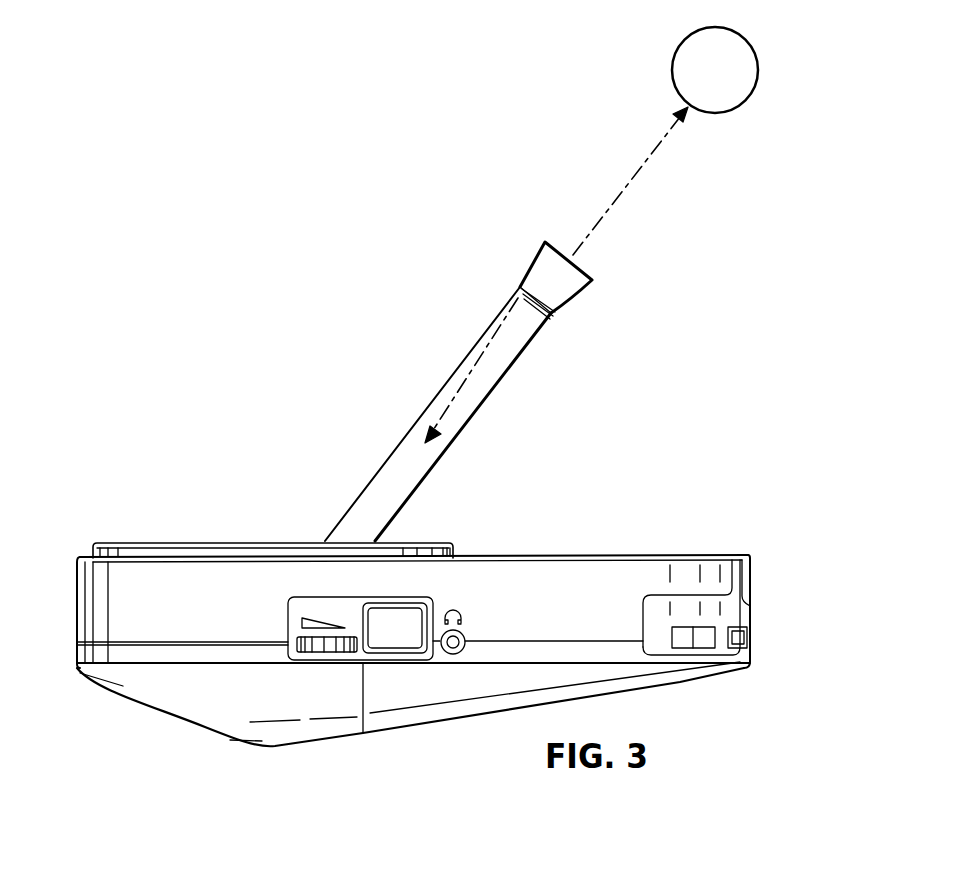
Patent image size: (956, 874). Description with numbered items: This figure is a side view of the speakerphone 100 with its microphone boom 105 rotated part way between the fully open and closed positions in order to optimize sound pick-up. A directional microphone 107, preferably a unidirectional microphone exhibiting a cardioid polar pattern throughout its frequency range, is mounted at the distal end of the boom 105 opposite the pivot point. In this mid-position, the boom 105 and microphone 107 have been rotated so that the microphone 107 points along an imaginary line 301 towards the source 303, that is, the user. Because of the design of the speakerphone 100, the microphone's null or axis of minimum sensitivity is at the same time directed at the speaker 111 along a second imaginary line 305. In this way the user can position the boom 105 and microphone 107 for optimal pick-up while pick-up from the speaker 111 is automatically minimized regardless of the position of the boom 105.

The speakerphone 100 is at (250, 437).
The microphone boom 105 is at (402, 438).
The directional microphone 107 is at (592, 278).
The speaker 111 is at (158, 543).
The imaginary line 301 is at (630, 183).
The source 303 is at (733, 95).
The imaginary line 305 is at (487, 365).